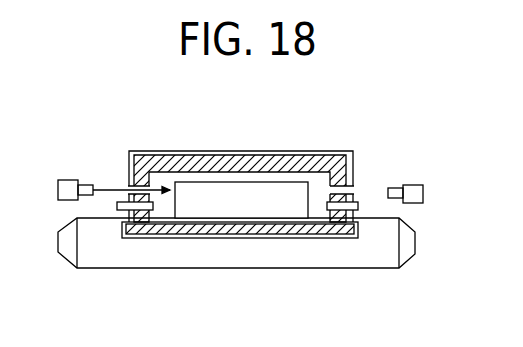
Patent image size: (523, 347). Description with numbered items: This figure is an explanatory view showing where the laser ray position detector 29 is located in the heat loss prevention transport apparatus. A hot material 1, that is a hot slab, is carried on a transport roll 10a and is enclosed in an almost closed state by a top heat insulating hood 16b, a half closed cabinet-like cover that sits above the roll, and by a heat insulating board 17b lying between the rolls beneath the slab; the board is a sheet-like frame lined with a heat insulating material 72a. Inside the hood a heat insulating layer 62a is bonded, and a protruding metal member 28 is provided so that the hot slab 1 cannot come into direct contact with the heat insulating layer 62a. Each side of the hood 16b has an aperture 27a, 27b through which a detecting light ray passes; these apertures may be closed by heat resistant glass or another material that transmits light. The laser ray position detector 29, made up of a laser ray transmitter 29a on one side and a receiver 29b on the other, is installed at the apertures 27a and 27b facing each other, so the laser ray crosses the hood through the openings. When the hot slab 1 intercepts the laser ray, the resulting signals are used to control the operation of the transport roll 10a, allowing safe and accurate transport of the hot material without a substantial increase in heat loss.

The hot material 1 is at (283, 192).
The transport roll 10a is at (163, 257).
The top heat insulating hood 16b is at (184, 151).
The heat insulating board 17b is at (237, 239).
The aperture 27a is at (130, 186).
The aperture 27b is at (352, 202).
The protruding metal member 28 is at (358, 207).
The laser ray position detector 29 is at (428, 168).
The laser ray transmitter 29a is at (68, 180).
The receiver 29b is at (415, 185).
The heat insulating layer 62a is at (240, 168).
The heat insulating material 72a is at (285, 233).